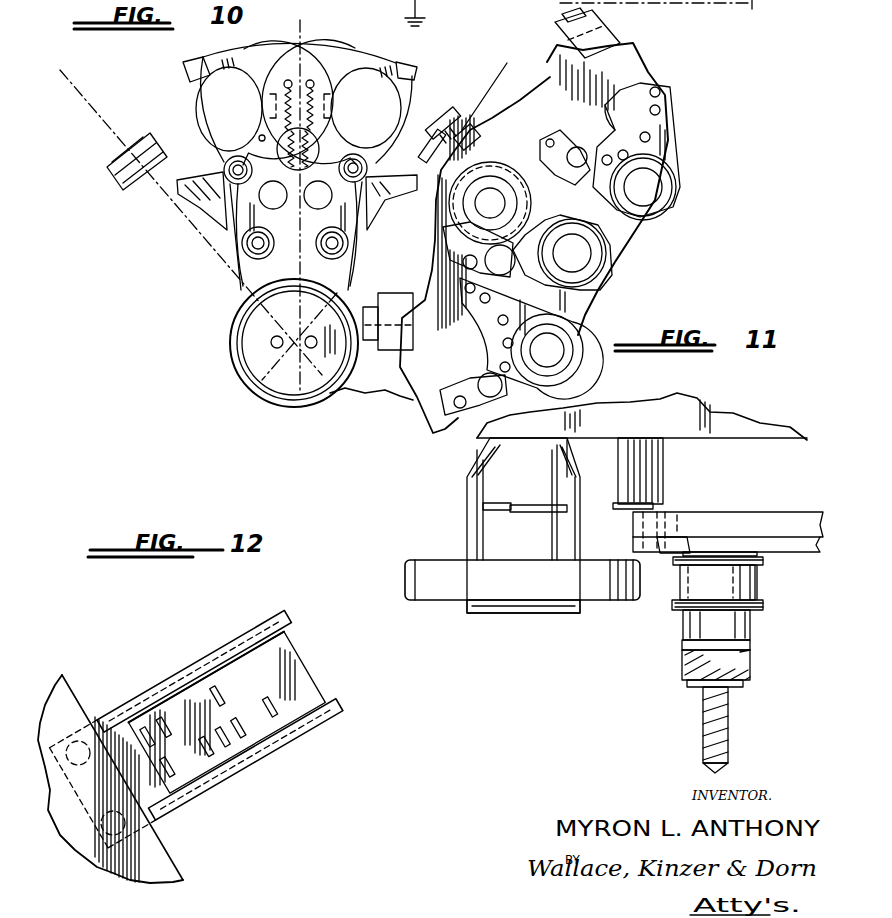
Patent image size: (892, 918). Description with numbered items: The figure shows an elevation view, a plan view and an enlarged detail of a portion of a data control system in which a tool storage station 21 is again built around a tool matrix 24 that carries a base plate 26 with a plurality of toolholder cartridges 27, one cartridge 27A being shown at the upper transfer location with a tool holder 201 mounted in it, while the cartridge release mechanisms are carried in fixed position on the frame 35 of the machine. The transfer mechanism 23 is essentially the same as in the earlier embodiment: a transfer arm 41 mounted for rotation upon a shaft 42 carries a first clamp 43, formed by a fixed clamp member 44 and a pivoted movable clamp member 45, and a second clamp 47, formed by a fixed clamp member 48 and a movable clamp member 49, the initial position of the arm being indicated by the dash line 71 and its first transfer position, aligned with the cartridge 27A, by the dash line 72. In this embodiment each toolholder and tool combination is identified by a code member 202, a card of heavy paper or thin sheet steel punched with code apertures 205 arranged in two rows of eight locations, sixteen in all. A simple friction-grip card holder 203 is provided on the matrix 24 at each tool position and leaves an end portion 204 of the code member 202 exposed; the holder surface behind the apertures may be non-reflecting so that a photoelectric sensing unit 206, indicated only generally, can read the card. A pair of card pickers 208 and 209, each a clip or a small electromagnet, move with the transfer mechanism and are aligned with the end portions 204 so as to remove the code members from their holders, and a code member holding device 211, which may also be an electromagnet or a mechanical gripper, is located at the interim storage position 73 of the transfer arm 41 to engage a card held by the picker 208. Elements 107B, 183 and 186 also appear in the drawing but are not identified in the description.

In FIG. 10, the tool storage station 21 is at (410, 410).
In FIG. 10, the transfer mechanism 23 is at (258, 36).
In FIG. 11, the transfer mechanism 23 is at (536, 622).
In FIG. 10, the tool matrix 24 is at (612, 280).
In FIG. 10, the base plate 26 is at (423, 433).
In FIG. 12, the base plate 26 is at (158, 845).
In FIG. 10, the toolholder cartridges 27 is at (668, 147).
In FIG. 10, the toolholder cartridge 27A is at (610, 240).
In FIG. 11, the toolholder cartridge 27A is at (720, 540).
In FIG. 11, the frame 35 is at (762, 438).
In FIG. 10, the transfer arm 41 is at (300, 45).
In FIG. 11, the transfer arm 41 is at (458, 587).
In FIG. 10, the shaft 42 is at (280, 383).
In FIG. 11, the shaft 42 is at (567, 615).
In FIG. 10, the first clamp 43 is at (370, 113).
In FIG. 10, the fixed clamp member 44 is at (400, 70).
In FIG. 11, the fixed clamp member 44 is at (628, 602).
In FIG. 10, the movable clamp member 45 is at (388, 182).
In FIG. 10, the second clamp 47 is at (195, 110).
In FIG. 10, the fixed clamp member 48 is at (197, 60).
In FIG. 11, the fixed clamp member 48 is at (420, 588).
In FIG. 10, the movable clamp member 49 is at (220, 187).
In FIG. 10, the dash line 71 is at (300, 215).
In FIG. 10, the dash line 72 is at (506, 62).
In FIG. 10, the interim storage position 73 is at (88, 103).
In FIG. 10, the terminal 107B is at (414, 4).
In FIG. 10, the lever 183 is at (445, 2).
In FIG. 10, the link 186 is at (705, 3).
In FIG. 10, the tool holder 201 is at (490, 190).
In FIG. 11, the tool holder 201 is at (745, 593).
In FIG. 10, the code member 202 is at (428, 145).
In FIG. 12, the code member 202 is at (261, 730).
In FIG. 10, the card holder 203 is at (450, 130).
In FIG. 12, the card holder 203 is at (192, 672).
In FIG. 10, the end portion 204 is at (440, 128).
In FIG. 12, the end portion 204 is at (305, 680).
In FIG. 12, the code apertures 205 is at (158, 722).
In FIG. 10, the sensing unit 206 is at (447, 172).
In FIG. 11, the sensing unit 206 is at (655, 485).
In FIG. 10, the card picker 208 is at (323, 90).
In FIG. 11, the card picker 208 is at (556, 514).
In FIG. 10, the card picker 209 is at (274, 90).
In FIG. 11, the card picker 209 is at (497, 512).
In FIG. 10, the code member holding device 211 is at (137, 145).